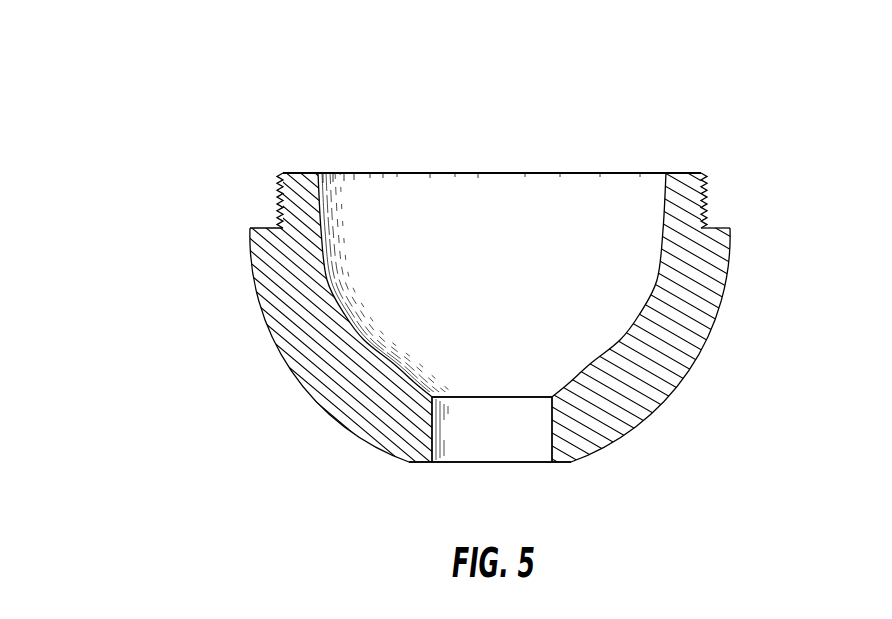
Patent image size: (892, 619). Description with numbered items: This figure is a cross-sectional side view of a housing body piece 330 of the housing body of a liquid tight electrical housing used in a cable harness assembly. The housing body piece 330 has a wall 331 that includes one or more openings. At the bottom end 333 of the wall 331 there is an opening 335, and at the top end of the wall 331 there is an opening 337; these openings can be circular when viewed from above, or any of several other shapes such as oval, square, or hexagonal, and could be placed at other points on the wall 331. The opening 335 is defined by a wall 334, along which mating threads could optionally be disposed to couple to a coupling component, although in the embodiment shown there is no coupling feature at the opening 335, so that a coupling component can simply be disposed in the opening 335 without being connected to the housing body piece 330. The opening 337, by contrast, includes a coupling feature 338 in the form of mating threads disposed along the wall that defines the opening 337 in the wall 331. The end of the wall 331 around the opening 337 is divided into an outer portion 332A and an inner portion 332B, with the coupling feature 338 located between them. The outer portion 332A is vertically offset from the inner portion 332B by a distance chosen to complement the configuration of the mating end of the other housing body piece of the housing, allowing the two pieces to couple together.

The housing body piece 330 is at (142, 56).
The wall 331 is at (686, 376).
The outer portion 332A is at (686, 172).
The inner portion 332B is at (721, 228).
The bottom end 333 is at (563, 463).
The wall 334 is at (437, 411).
The opening 335 is at (487, 452).
The opening 337 is at (502, 172).
The coupling feature 338 is at (270, 202).